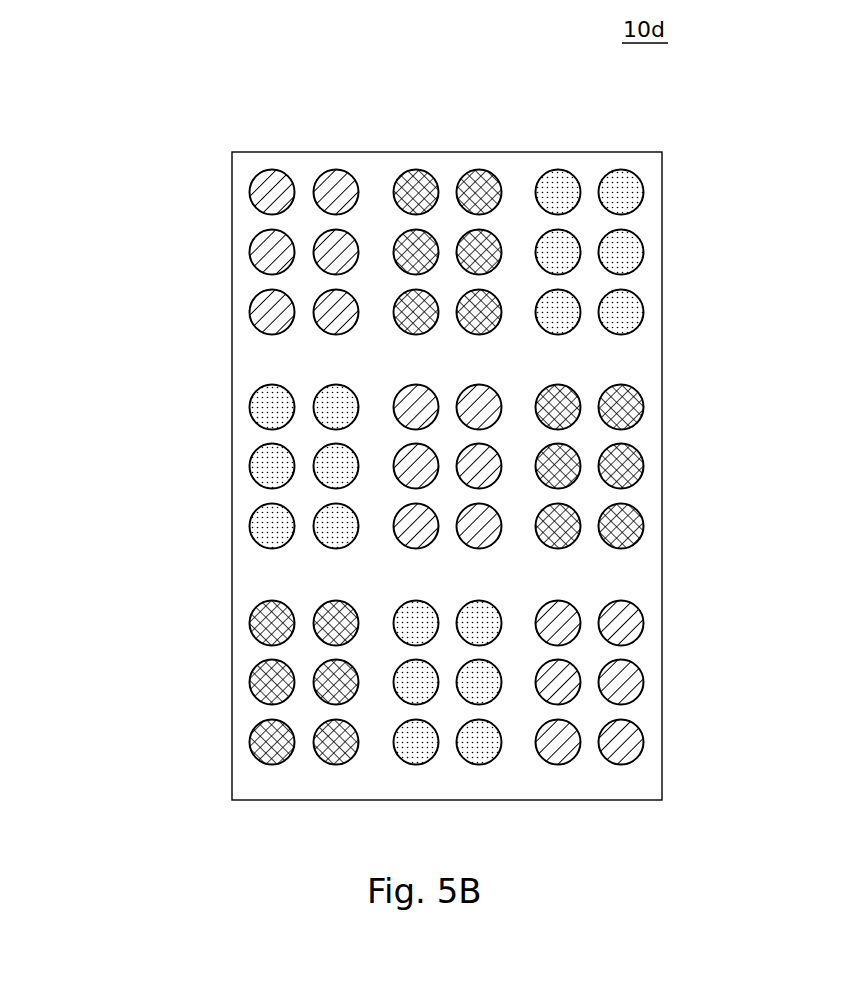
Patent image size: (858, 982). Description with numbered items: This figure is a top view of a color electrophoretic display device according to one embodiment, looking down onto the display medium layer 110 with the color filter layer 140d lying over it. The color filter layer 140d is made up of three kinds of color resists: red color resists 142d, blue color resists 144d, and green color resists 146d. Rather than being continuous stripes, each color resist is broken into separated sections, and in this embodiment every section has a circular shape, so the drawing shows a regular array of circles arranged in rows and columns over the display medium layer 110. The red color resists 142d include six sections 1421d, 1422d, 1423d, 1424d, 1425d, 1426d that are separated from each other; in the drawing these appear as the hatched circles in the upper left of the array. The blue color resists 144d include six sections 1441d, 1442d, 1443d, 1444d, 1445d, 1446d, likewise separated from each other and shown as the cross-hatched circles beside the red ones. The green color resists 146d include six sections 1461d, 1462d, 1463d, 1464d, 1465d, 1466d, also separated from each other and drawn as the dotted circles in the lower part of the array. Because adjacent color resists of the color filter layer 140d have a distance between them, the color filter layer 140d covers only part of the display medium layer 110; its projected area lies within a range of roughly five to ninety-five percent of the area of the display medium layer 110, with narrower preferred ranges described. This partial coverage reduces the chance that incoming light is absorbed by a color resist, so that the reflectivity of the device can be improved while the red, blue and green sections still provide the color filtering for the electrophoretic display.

The display medium layer 110 is at (636, 367).
The color filter layer 140d is at (136, 18).
The red color resists 142d is at (139, 153).
The blue color resists 144d is at (756, 152).
The green color resists 146d is at (756, 582).
The section 1421d is at (258, 188).
The section 1422d is at (326, 203).
The section 1423d is at (258, 248).
The section 1424d is at (326, 263).
The section 1425d is at (258, 310).
The section 1426d is at (326, 323).
The section 1441d is at (420, 186).
The section 1442d is at (490, 193).
The section 1443d is at (420, 246).
The section 1444d is at (490, 253).
The section 1445d is at (420, 306).
The section 1446d is at (490, 313).
The section 1461d is at (420, 735).
The section 1462d is at (490, 743).
The section 1463d is at (420, 675).
The section 1464d is at (490, 683).
The section 1465d is at (420, 616).
The section 1466d is at (490, 624).